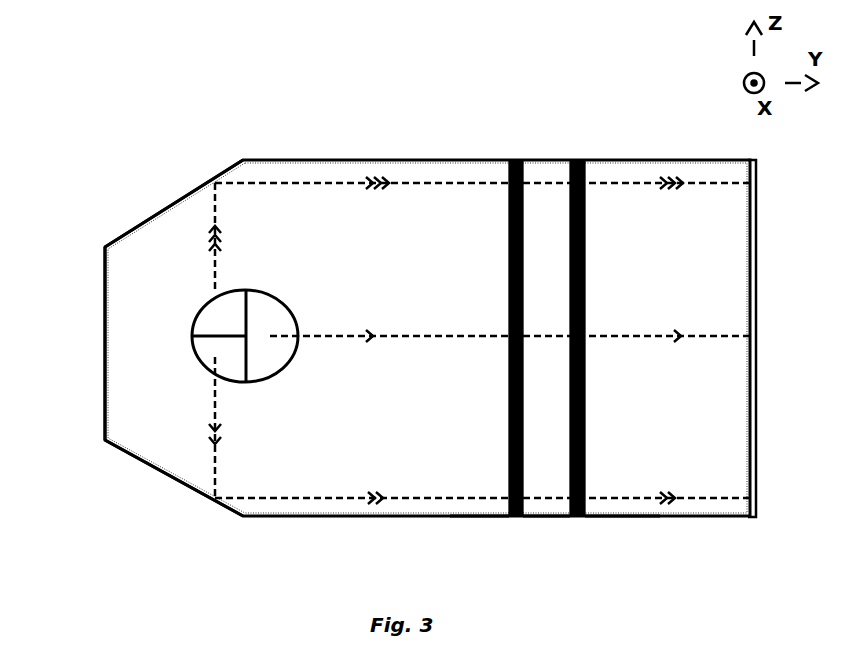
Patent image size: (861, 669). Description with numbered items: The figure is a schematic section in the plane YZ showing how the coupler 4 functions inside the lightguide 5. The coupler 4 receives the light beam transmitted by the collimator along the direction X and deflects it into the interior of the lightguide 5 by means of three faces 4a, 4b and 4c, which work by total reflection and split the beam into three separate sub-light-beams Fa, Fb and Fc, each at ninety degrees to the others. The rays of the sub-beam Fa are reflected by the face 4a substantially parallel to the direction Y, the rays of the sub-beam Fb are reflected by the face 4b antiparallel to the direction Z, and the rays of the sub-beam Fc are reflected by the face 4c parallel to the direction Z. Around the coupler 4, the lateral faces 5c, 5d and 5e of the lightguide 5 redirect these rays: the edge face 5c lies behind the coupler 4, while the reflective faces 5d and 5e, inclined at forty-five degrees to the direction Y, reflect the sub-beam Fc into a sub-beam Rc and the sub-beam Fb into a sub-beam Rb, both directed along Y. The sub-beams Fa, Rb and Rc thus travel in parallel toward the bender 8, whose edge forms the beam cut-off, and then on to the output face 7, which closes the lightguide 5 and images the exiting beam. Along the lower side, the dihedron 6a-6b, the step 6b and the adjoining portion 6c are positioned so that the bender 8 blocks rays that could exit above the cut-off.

The coupler 4 is at (272, 380).
The face 4a is at (270, 318).
The face 4b is at (218, 347).
The face 4c is at (201, 321).
The lightguide 5 is at (90, 182).
The edge face 5c is at (103, 346).
The face 5d is at (184, 199).
The face 5e is at (158, 468).
The dihedron portion 6a is at (493, 516).
The step 6b is at (545, 516).
The housing bottom wall section 6c is at (607, 516).
The output face 7 is at (757, 268).
The bender 8 is at (520, 158).
The sub-beam Rc is at (440, 172).
The sub-beam Rb is at (432, 498).
The sub-light-beam Fa is at (428, 336).
The sub-light-beam Fb is at (214, 425).
The sub-light-beam Fc is at (214, 287).